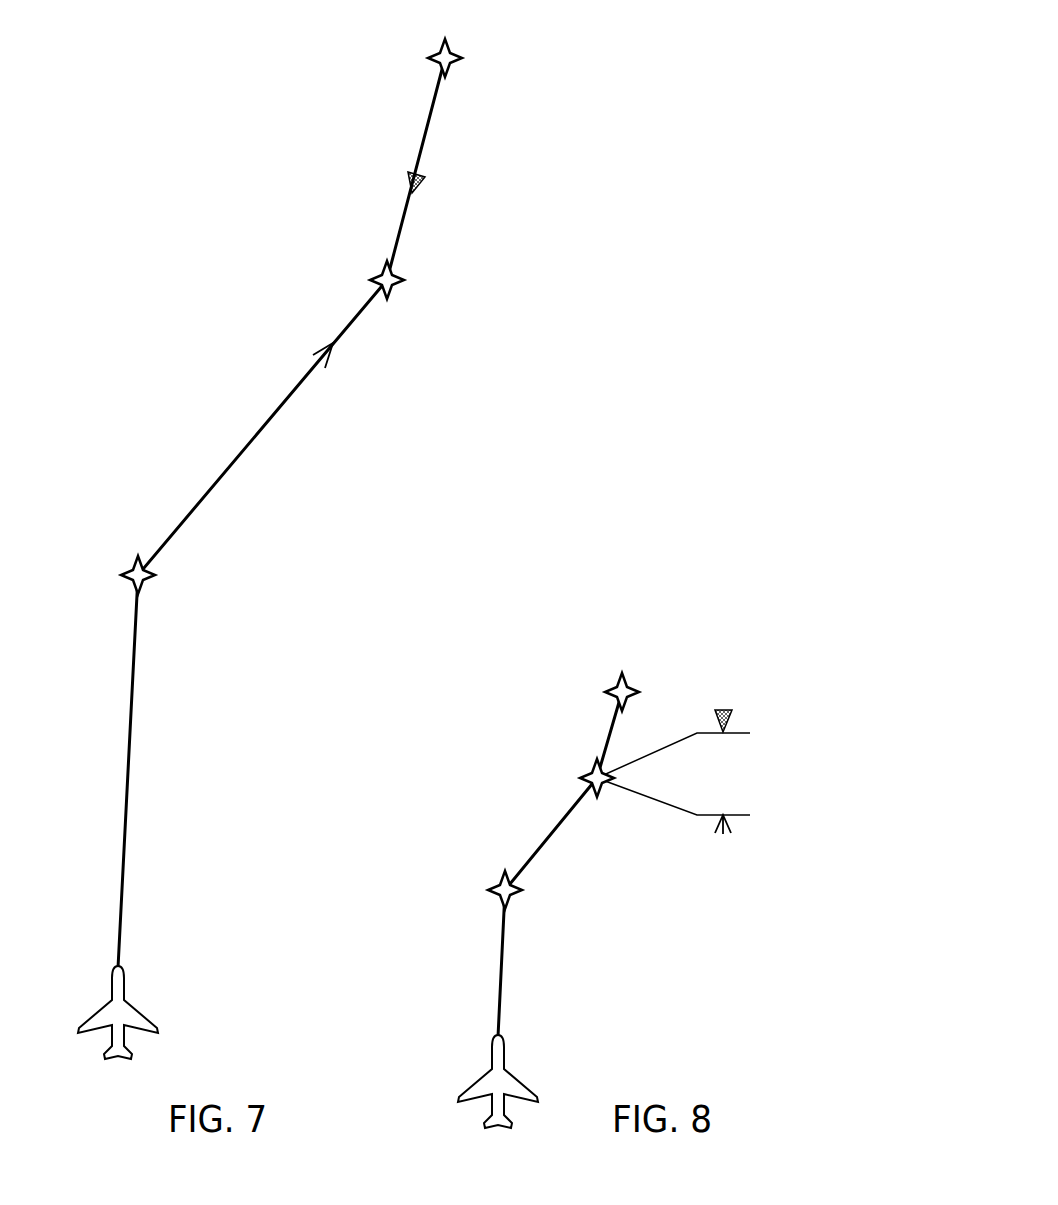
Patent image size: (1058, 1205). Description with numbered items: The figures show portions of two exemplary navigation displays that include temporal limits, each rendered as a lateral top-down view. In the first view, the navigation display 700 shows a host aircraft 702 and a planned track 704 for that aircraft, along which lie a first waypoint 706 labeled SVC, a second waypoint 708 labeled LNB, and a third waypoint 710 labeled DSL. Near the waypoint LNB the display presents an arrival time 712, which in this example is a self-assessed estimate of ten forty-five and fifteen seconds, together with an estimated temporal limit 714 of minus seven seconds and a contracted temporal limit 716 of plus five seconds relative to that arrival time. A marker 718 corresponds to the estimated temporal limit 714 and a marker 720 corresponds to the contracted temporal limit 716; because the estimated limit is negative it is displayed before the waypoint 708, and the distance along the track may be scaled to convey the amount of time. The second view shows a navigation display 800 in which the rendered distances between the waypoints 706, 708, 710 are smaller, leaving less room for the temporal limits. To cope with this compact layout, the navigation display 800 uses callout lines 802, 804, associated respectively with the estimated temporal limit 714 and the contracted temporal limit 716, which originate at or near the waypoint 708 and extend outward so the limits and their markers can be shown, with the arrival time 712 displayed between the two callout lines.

In FIG. 7, the navigation display 700 is at (284, 544).
In FIG. 7, the host aircraft 702 is at (125, 990).
In FIG. 8, the host aircraft 702 is at (503, 1058).
In FIG. 7, the planned track 704 is at (428, 120).
In FIG. 8, the planned track 704 is at (608, 738).
In FIG. 7, the first waypoint 706 is at (128, 568).
In FIG. 8, the first waypoint 706 is at (512, 897).
In FIG. 7, the second waypoint 708 is at (378, 273).
In FIG. 8, the second waypoint 708 is at (605, 790).
In FIG. 7, the third waypoint 710 is at (437, 54).
In FIG. 8, the third waypoint 710 is at (630, 683).
In FIG. 7, the arrival time 712 is at (443, 327).
In FIG. 8, the arrival time 712 is at (772, 775).
In FIG. 7, the estimated temporal limit 714 is at (385, 380).
In FIG. 8, the estimated temporal limit 714 is at (762, 858).
In FIG. 7, the contracted temporal limit 716 is at (458, 165).
In FIG. 8, the contracted temporal limit 716 is at (760, 690).
In FIG. 7, the marker 718 is at (315, 355).
In FIG. 8, the marker 718 is at (735, 824).
In FIG. 7, the marker 720 is at (408, 183).
In FIG. 8, the marker 720 is at (735, 719).
In FIG. 8, the navigation display 800 is at (664, 844).
In FIG. 8, the callout line 802 is at (672, 808).
In FIG. 8, the callout line 804 is at (668, 747).